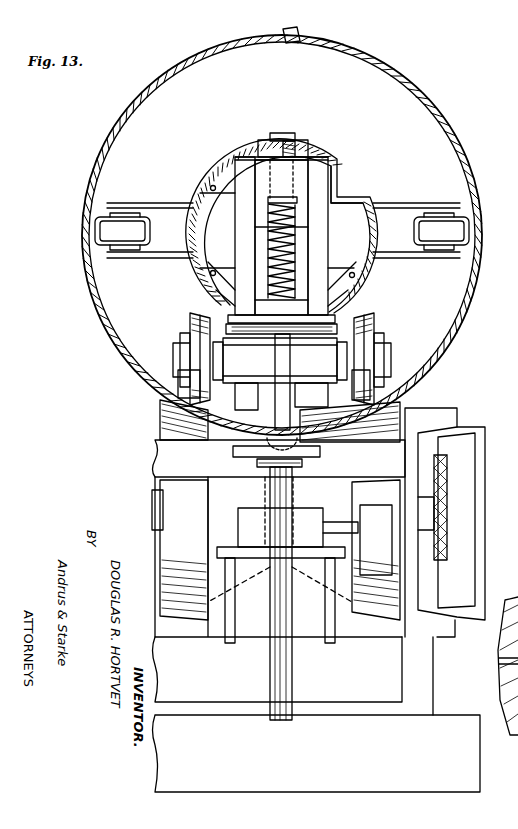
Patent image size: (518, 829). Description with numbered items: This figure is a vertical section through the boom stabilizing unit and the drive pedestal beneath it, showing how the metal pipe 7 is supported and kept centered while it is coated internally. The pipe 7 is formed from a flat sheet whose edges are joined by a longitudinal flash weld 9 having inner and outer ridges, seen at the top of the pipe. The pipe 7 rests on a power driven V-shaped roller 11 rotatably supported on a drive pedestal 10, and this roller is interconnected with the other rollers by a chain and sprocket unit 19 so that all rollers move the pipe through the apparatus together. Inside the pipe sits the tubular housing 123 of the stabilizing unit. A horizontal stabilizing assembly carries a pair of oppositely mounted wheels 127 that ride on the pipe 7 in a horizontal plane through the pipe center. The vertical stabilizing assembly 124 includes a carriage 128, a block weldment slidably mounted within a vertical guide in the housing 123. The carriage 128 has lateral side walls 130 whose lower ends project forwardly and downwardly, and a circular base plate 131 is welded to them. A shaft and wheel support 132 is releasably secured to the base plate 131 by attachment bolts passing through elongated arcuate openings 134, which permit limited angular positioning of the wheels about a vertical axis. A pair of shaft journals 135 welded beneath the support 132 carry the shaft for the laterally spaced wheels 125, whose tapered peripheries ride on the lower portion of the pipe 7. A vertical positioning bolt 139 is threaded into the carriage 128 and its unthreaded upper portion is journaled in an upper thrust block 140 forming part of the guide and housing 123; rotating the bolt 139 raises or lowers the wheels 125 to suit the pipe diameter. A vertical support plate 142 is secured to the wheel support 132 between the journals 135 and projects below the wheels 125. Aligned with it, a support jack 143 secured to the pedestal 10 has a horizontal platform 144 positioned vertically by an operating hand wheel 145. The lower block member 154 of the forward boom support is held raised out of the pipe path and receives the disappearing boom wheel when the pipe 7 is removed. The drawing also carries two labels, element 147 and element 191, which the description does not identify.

The metal pipe 7 is at (424, 88).
The longitudinal flash weld 9 is at (293, 28).
The drive pedestal 10 is at (445, 410).
The power driven V-shaped roller 11 is at (165, 428).
The chain and sprocket unit 19 is at (446, 512).
The tubular housing 123 is at (216, 165).
The vertical stabilizing assembly 124 is at (228, 287).
The wheels 125 is at (190, 325).
The oppositely mounted wheels 127 is at (140, 213).
The carriage 128 is at (324, 260).
The lateral side walls 130 is at (240, 238).
The circular base plate 131 is at (348, 312).
The shaft and wheel support 132 is at (268, 342).
The elongated arcuate openings 134 is at (262, 318).
The shaft journals 135 is at (256, 380).
The vertical positioning bolt 139 is at (262, 215).
The upper thrust block 140 is at (300, 163).
The vertical support plate 142 is at (300, 410).
The support jack 143 is at (272, 488).
The horizontal platform 144 is at (236, 452).
The operating hand wheel 145 is at (370, 555).
The flange 147 is at (352, 197).
The lower block member 154 is at (232, 443).
The nut 191 is at (274, 138).